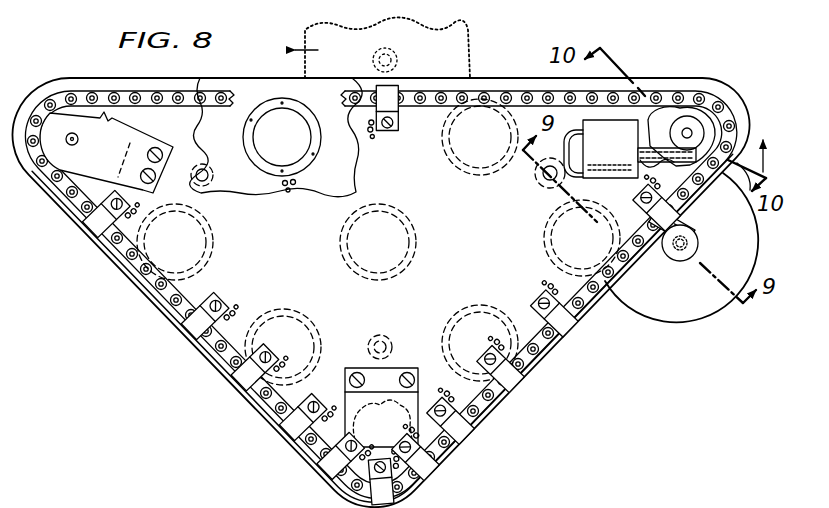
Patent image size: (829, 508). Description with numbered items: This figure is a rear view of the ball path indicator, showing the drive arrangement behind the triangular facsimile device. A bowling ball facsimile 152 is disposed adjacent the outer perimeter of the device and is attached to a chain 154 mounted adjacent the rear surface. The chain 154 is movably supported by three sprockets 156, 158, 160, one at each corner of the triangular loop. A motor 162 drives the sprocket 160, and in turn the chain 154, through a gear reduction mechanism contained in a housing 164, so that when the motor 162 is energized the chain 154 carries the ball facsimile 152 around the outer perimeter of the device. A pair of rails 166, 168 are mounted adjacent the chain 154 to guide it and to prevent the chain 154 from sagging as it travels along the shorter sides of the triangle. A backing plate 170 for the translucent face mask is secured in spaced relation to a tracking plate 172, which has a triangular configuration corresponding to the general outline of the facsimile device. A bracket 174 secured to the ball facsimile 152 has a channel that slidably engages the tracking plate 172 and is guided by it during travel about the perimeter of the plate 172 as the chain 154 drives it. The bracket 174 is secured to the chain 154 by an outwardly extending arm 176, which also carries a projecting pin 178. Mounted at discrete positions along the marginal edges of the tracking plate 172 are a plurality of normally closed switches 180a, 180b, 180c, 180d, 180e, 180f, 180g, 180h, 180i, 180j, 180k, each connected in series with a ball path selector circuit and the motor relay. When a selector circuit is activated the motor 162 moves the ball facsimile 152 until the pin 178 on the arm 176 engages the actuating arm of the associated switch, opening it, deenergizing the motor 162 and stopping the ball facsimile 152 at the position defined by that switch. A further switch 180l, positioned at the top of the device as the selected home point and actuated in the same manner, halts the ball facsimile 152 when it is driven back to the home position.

The bowling ball facsimile 152 is at (468, 40).
The chain 154 is at (140, 263).
The sprocket 156 is at (66, 118).
The sprocket 158 is at (385, 393).
The sprocket 160 is at (706, 112).
The motor 162 is at (618, 154).
The housing 164 is at (662, 146).
The rail 166 is at (547, 354).
The rail 168 is at (218, 357).
The backing plate 170 is at (263, 81).
The tracking plate 172 is at (372, 172).
The bracket 174 is at (697, 246).
The arm 176 is at (640, 226).
The pin 178 is at (657, 222).
The normally closed switch 180a is at (102, 228).
The normally closed switch 180b is at (198, 330).
The normally closed switch 180c is at (252, 374).
The normally closed switch 180d is at (297, 428).
The normally closed switch 180e is at (349, 482).
The normally closed switch 180f is at (382, 496).
The normally closed switch 180g is at (421, 478).
The normally closed switch 180h is at (467, 434).
The normally closed switch 180i is at (513, 388).
The normally closed switch 180j is at (575, 326).
The normally closed switch 180k is at (684, 213).
The home position switch 180l is at (370, 92).